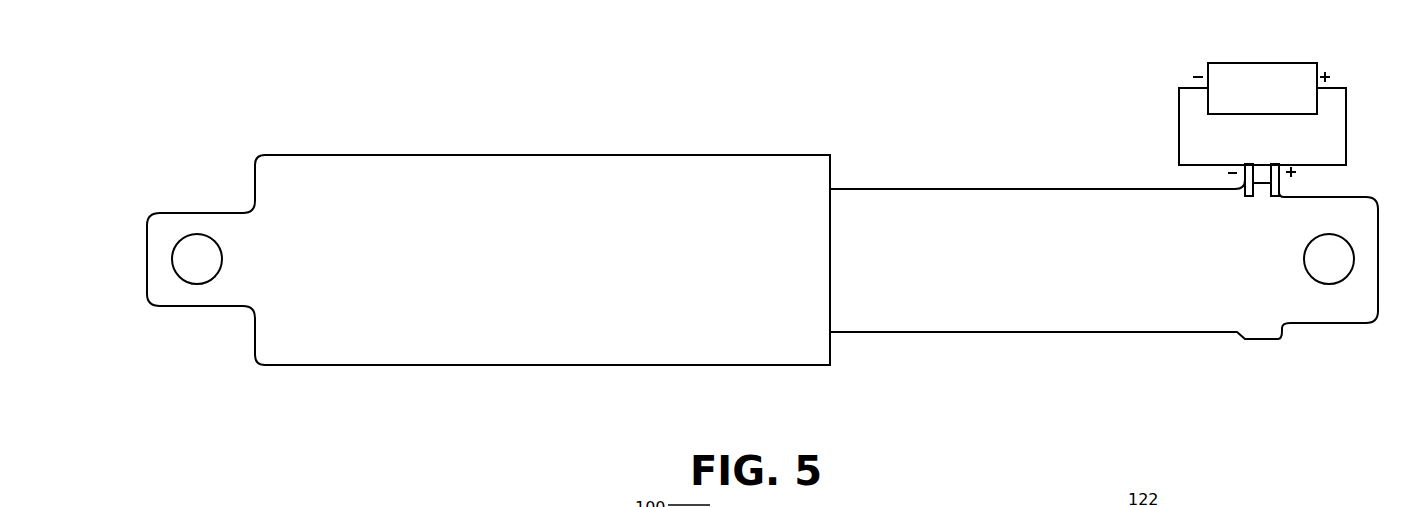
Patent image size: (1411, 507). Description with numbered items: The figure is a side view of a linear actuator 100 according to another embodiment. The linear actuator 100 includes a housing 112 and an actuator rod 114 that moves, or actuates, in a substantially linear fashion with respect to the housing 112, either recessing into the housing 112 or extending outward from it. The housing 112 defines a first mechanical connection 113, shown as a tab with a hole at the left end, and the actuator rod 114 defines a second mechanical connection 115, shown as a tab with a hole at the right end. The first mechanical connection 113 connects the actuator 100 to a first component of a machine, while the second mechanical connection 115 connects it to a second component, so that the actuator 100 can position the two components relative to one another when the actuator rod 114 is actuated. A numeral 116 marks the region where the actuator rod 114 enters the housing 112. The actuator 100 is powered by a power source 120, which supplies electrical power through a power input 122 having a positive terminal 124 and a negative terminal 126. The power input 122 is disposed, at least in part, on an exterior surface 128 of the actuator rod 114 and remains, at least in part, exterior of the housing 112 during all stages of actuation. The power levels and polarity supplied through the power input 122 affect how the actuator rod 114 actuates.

The linear actuator 100 is at (802, 105).
The housing 112 is at (525, 153).
The first mechanical connection 113 is at (183, 250).
The actuator rod 114 is at (1020, 183).
The second mechanical connection 115 is at (1333, 275).
The rod seal / housing opening 116 is at (838, 182).
The power source 120 is at (1262, 63).
The power input 122 is at (1162, 173).
The positive terminal 124 is at (1278, 185).
The negative terminal 126 is at (1247, 196).
The exterior surface 128 is at (1195, 191).